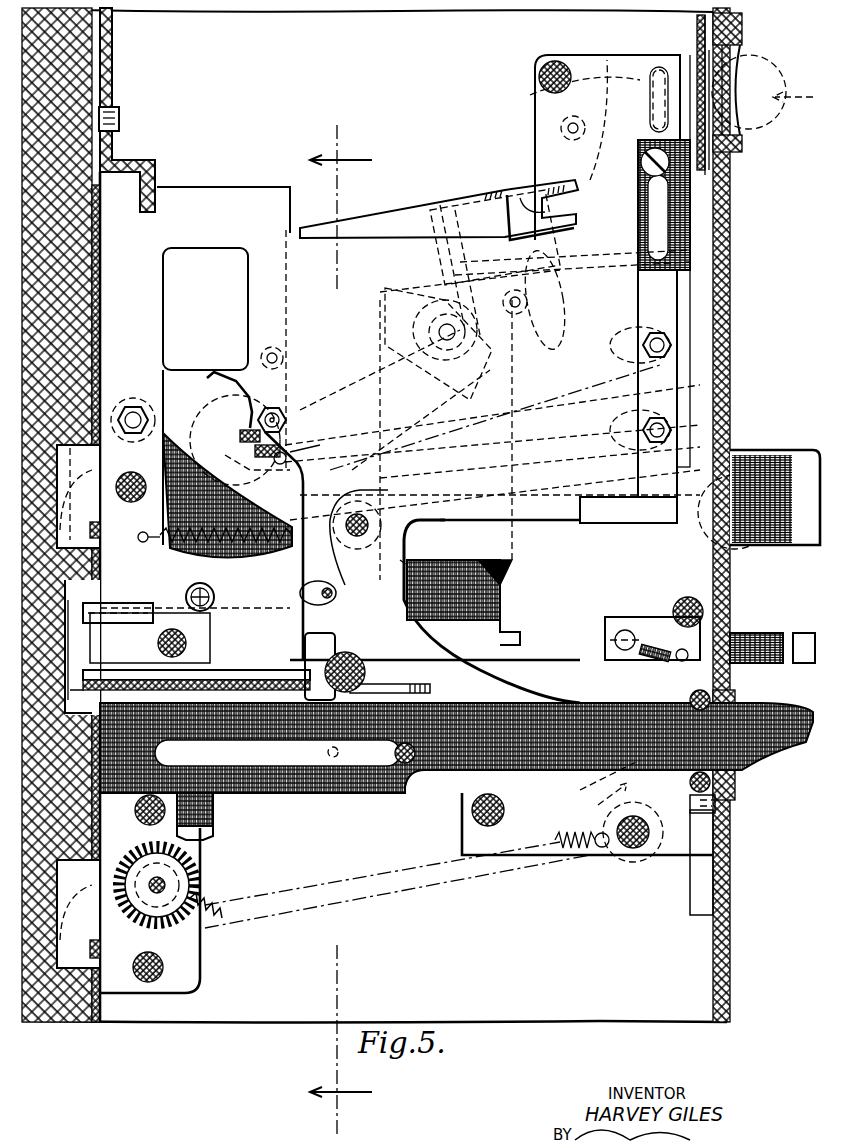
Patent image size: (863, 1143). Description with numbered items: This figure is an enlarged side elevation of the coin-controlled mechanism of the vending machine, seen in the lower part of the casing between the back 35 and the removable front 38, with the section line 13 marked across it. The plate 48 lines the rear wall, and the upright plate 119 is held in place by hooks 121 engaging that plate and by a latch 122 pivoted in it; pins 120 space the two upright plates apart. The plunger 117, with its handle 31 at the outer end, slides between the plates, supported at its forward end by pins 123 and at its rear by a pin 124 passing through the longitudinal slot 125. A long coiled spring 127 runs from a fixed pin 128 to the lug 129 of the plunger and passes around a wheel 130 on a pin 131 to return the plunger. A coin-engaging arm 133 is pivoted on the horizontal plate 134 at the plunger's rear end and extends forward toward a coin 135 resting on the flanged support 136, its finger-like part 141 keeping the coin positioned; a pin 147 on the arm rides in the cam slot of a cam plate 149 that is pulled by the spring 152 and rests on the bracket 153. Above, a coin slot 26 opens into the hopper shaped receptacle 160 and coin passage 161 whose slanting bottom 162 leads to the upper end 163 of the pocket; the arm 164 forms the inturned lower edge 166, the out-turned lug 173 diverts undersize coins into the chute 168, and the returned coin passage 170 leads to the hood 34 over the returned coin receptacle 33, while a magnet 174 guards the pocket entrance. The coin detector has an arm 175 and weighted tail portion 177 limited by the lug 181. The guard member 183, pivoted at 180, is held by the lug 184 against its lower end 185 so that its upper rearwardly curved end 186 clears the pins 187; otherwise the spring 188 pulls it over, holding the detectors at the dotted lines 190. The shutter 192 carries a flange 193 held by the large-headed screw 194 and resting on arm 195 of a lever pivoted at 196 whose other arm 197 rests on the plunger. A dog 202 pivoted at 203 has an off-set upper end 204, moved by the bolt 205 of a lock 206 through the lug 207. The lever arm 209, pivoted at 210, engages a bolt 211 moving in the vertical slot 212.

The section line 13— 13 is at (341, 631).
The coin slot 26 is at (753, 96).
The handle 31 is at (772, 735).
The returned coin receptacle 33 is at (772, 633).
The hood 34 is at (787, 470).
The back 35 is at (70, 1020).
The front 38 is at (730, 932).
The plate 48 is at (100, 262).
The plunger 117 is at (555, 775).
The upright plate 119 is at (448, 795).
The pin 120 is at (133, 480).
The hook 121 is at (572, 78).
The latch 122 is at (110, 100).
The pin 123 is at (705, 700).
The pin 124 is at (403, 762).
The longitudinal slot 125 is at (300, 795).
The coiled spring 127 is at (215, 915).
The fixed pin 128 is at (600, 848).
The lug 129 is at (213, 822).
The wheel 130 is at (190, 863).
The pin 131 is at (165, 888).
The coin-engaging arm 133 is at (282, 665).
The horizontal plate 134 is at (277, 753).
The coin 135 is at (365, 675).
The flanged support 136 is at (348, 800).
The finger-like part 141 is at (430, 690).
The pin 147 is at (200, 676).
The cam plate 149 is at (135, 600).
The spring 152 is at (188, 592).
The bracket 153 is at (518, 648).
The hopper shaped receptacle 160 is at (612, 58).
The coin passage 161 is at (485, 245).
The slanting bottom 162 is at (492, 325).
The upper end of pocket 163 is at (286, 290).
The arm 164 is at (573, 124).
The inturned lower edge 166 is at (548, 300).
The chute 168 is at (612, 262).
The returned coin passage 170 is at (683, 565).
The out-turned lug 173 is at (528, 208).
The magnet 174 is at (405, 370).
The arm of coin detector 175 is at (330, 392).
The weighted tail portion 177 is at (240, 430).
The pivot 180 is at (320, 590).
The lug 181 is at (235, 380).
The guard member 183 is at (308, 480).
The lug 184 is at (325, 660).
The lower end 185 is at (290, 636).
The upper rearwardly curved end 186 is at (285, 420).
The pin 187 is at (295, 452).
The spring 188 is at (265, 520).
The dotted lines 190 is at (334, 429).
The shutter 192 is at (690, 212).
The flange 193 is at (690, 296).
The large-headed screw 194 is at (643, 165).
The arm 195 is at (576, 482).
The pivot 196 is at (360, 522).
The arm 197 is at (520, 690).
The dog 202 is at (605, 795).
The pivot 203 is at (638, 848).
The off-set upper end 204 is at (660, 650).
The bolt 205 is at (715, 820).
The lock 206 is at (705, 898).
The lug 207 is at (640, 838).
The lever arm 209 is at (175, 435).
The pivot 210 is at (133, 412).
The bolt 211 is at (672, 345).
The vertical slot 212 is at (672, 382).